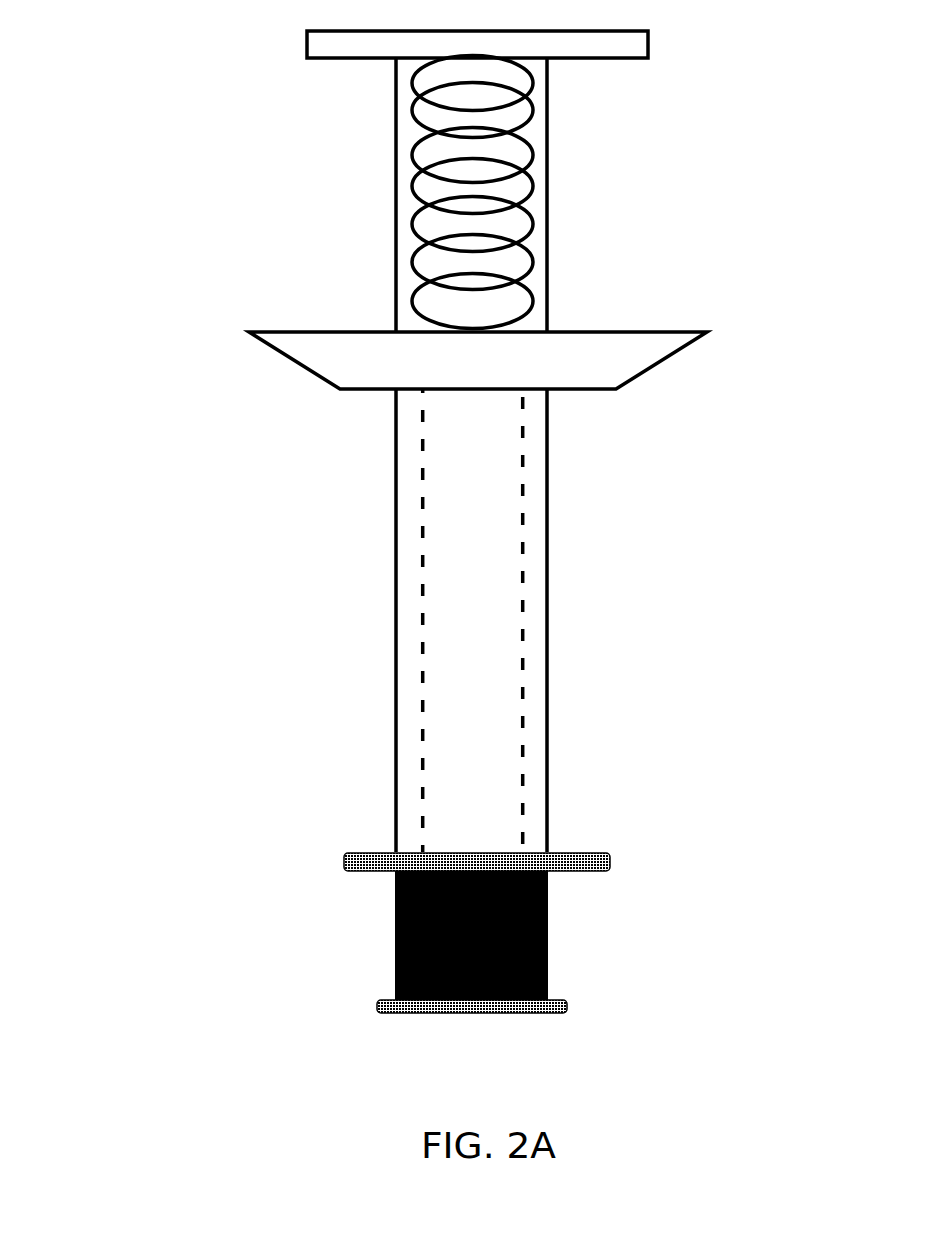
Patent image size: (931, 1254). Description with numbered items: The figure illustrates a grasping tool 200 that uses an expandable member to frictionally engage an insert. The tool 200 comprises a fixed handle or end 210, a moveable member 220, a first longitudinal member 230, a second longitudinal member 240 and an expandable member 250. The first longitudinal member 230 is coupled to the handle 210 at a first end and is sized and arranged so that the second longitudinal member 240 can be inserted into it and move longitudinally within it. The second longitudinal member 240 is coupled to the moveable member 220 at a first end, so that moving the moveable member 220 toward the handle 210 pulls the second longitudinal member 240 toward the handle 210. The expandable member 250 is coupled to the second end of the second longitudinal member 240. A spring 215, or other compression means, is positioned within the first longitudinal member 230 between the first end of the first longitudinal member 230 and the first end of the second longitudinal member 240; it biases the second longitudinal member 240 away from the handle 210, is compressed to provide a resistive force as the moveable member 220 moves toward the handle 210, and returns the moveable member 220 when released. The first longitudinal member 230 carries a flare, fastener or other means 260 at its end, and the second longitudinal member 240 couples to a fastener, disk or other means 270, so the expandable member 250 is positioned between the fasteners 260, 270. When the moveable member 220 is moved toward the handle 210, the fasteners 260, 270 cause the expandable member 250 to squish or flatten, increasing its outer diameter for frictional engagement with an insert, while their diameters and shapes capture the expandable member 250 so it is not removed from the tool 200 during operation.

The tool 200 is at (184, 87).
The fixed handle or end 210 is at (648, 43).
The spring 215 is at (535, 183).
The moveable member 220 is at (647, 359).
The first longitudinal member 230 is at (547, 457).
The second longitudinal member 240 is at (497, 582).
The expandable member 250 is at (548, 936).
The flare, fastener or other means 260 is at (610, 862).
The fastener, disk or other means 270 is at (567, 1007).